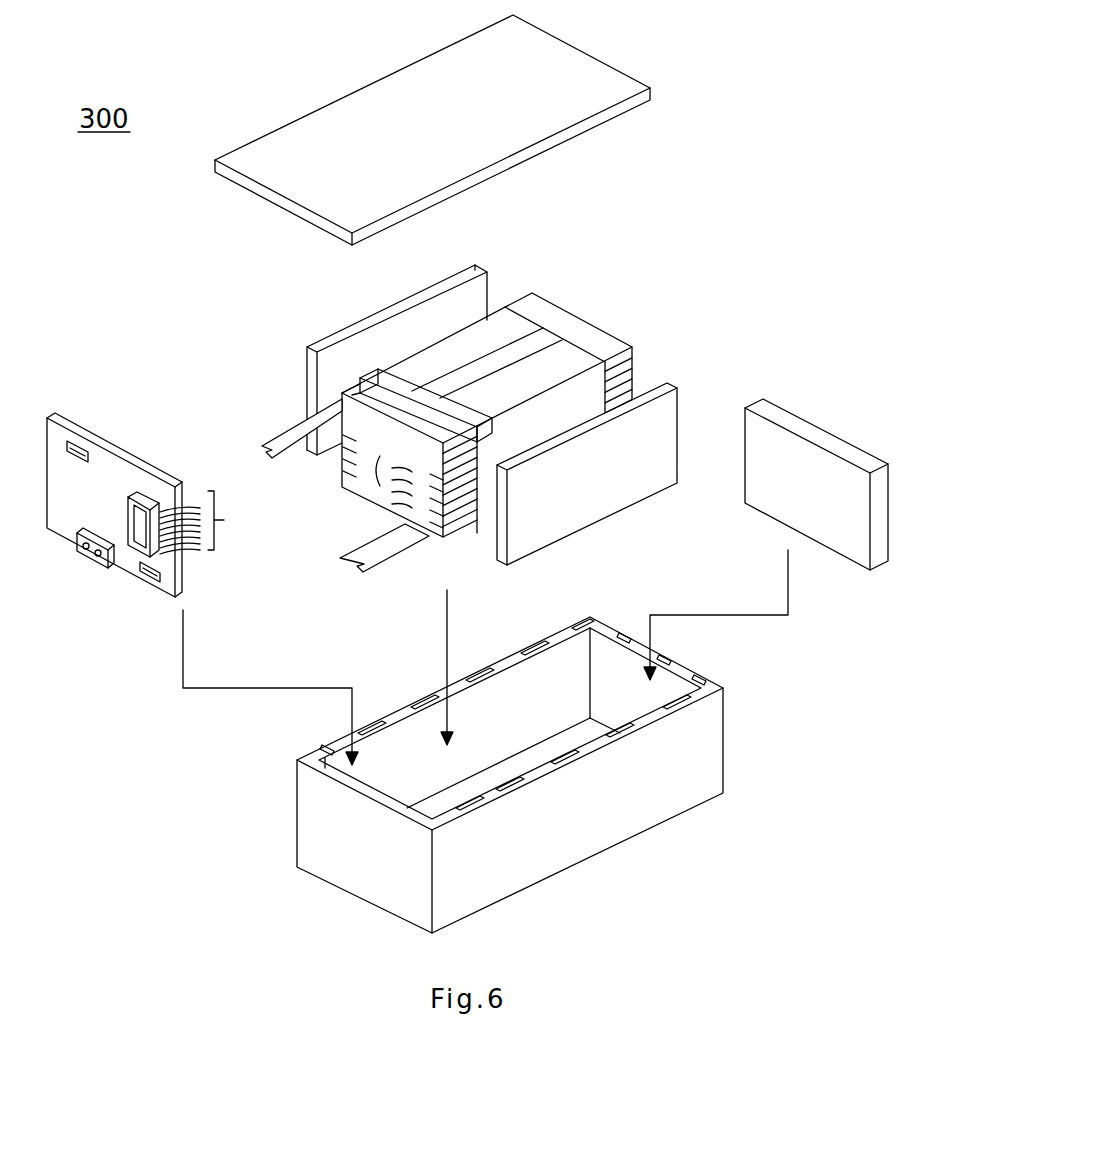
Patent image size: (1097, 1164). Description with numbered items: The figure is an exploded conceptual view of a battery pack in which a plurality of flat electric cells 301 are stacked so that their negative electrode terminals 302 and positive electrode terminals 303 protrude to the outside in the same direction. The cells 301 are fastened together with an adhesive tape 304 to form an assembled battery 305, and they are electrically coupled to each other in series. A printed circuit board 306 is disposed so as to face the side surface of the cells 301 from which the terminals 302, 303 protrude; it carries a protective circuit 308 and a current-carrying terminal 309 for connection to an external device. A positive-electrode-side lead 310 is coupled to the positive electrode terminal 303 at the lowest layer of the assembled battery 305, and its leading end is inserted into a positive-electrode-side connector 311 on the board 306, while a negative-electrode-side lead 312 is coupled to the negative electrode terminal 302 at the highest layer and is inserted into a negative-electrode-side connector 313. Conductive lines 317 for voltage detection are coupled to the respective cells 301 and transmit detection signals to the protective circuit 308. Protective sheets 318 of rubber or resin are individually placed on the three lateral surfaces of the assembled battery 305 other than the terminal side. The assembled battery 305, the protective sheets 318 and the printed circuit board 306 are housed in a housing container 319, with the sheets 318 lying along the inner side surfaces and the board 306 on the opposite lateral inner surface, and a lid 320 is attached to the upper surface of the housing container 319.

The electric cell 301 is at (650, 356).
The negative electrode terminal 302 is at (345, 402).
The positive electrode terminal 303 is at (436, 401).
The adhesive tape 304 is at (565, 366).
The assembled battery 305 is at (437, 337).
The printed circuit board 306 is at (77, 416).
The protective circuit 308 is at (140, 497).
The current-carrying terminal 309 is at (92, 568).
The positive-electrode-side lead 310 is at (376, 560).
The positive-electrode-side connector 311 is at (180, 578).
The negative-electrode-side lead 312 is at (278, 446).
The negative-electrode-side connector 313 is at (86, 450).
The conductive lines 317 is at (372, 480).
The protective sheet 318 is at (367, 332).
The housing container 319 is at (712, 746).
The lid 320 is at (597, 78).